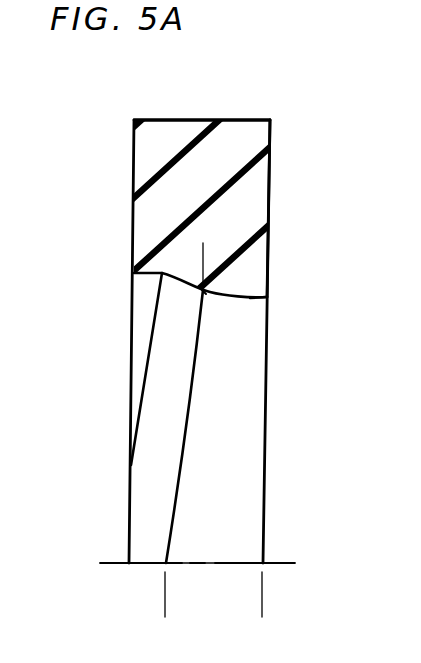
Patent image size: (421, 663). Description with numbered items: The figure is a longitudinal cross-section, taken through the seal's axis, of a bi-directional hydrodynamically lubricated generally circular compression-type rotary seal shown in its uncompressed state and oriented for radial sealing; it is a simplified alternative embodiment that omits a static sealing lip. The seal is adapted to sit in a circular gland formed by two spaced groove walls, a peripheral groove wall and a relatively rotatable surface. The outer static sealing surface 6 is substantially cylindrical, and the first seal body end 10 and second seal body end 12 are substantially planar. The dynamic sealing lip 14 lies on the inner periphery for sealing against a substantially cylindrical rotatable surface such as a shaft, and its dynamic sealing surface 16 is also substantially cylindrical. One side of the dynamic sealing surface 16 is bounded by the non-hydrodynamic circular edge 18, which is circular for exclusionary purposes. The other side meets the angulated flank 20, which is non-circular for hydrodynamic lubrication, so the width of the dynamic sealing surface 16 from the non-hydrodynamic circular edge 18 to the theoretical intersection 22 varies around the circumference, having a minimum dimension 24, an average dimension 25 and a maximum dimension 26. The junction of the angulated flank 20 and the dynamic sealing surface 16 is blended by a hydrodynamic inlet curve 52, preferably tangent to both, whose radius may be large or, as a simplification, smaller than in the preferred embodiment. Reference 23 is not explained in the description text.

The static sealing surface 6 is at (252, 119).
The first seal body end 10 is at (133, 212).
The second seal body end 12 is at (268, 207).
The dynamic sealing lip 14 is at (245, 280).
The dynamic sealing surface 16 is at (228, 497).
The non-hydrodynamic circular edge 18 is at (267, 298).
The angulated flank 20 is at (158, 284).
The theoretical intersection 22 is at (177, 458).
The bottom face 23 is at (148, 565).
The minimum dimension 24 is at (203, 253).
The average dimension 25 is at (185, 433).
The maximum dimension 26 is at (165, 607).
The hydrodynamic inlet curve 52 is at (203, 296).